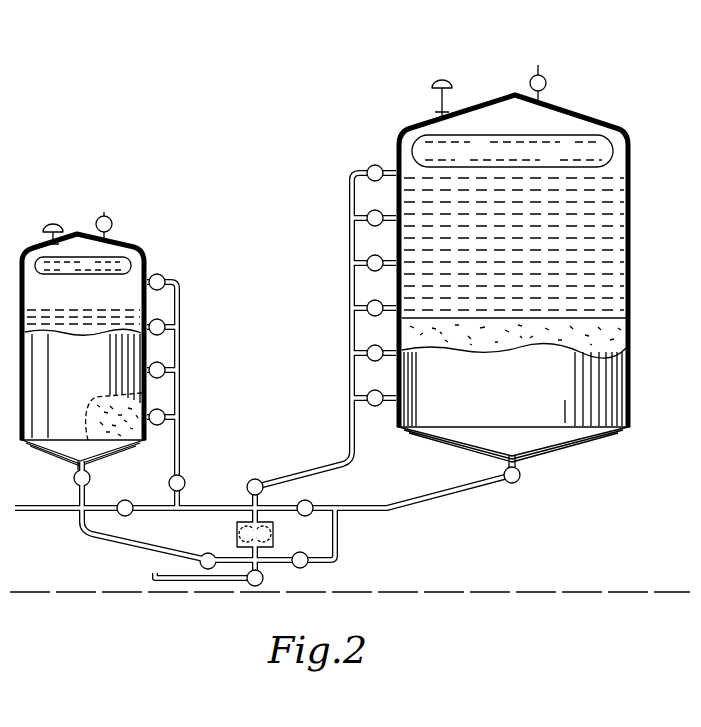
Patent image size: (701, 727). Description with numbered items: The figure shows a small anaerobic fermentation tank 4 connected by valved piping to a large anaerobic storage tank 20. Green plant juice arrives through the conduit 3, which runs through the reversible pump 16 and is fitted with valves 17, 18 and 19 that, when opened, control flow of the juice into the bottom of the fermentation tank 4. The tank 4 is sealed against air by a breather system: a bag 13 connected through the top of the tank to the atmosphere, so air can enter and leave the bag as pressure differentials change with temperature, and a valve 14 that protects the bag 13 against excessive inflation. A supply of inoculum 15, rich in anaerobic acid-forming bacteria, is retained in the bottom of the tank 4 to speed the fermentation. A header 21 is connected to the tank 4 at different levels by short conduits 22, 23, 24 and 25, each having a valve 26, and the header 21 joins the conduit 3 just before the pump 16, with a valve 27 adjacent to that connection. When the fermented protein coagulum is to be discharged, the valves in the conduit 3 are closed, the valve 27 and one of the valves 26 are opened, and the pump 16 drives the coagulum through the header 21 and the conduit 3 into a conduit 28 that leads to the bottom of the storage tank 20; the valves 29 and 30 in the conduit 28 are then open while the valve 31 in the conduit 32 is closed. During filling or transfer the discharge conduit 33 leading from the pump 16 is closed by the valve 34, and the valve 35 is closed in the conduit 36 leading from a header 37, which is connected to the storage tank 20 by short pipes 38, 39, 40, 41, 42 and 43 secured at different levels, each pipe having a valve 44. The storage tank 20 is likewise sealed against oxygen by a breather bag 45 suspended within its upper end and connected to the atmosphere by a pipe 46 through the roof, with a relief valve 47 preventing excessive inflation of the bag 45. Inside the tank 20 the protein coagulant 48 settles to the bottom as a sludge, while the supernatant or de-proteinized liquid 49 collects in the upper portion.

The conduit 3 is at (60, 505).
The fermentation tank 4 is at (148, 275).
The bag 13 is at (63, 265).
The valve 14 is at (110, 218).
The inoculum 15 is at (121, 441).
The reversible pump 16 is at (274, 534).
The valve 17 is at (128, 516).
The valve 18 is at (208, 552).
The valve 19 is at (91, 478).
The storage tank 20 is at (631, 325).
The header 21 is at (180, 352).
The short conduit 22 is at (151, 280).
The short conduit 23 is at (179, 328).
The short conduit 24 is at (147, 366).
The short conduit 25 is at (179, 419).
The valve 26 is at (164, 276).
The valve 27 is at (185, 482).
The conduit 28 is at (440, 500).
The valve 29 is at (306, 566).
The valve 30 is at (521, 476).
The valve 31 is at (314, 505).
The conduit 32 is at (287, 502).
The discharge conduit 33 is at (157, 579).
The valve 34 is at (264, 584).
The valve 35 is at (255, 478).
The conduit 36 is at (345, 461).
The header 37 is at (349, 284).
The short pipe 38 is at (357, 171).
The short pipe 39 is at (384, 212).
The short pipe 40 is at (384, 257).
The short pipe 41 is at (384, 303).
The short pipe 42 is at (384, 348).
The short pipe 43 is at (384, 393).
The valve 44 is at (377, 164).
The breather bag 45 is at (532, 157).
The pipe 46 is at (447, 94).
The relief valve 47 is at (548, 84).
The protein coagulant 48 is at (534, 338).
The de-proteinized liquid 49 is at (522, 243).